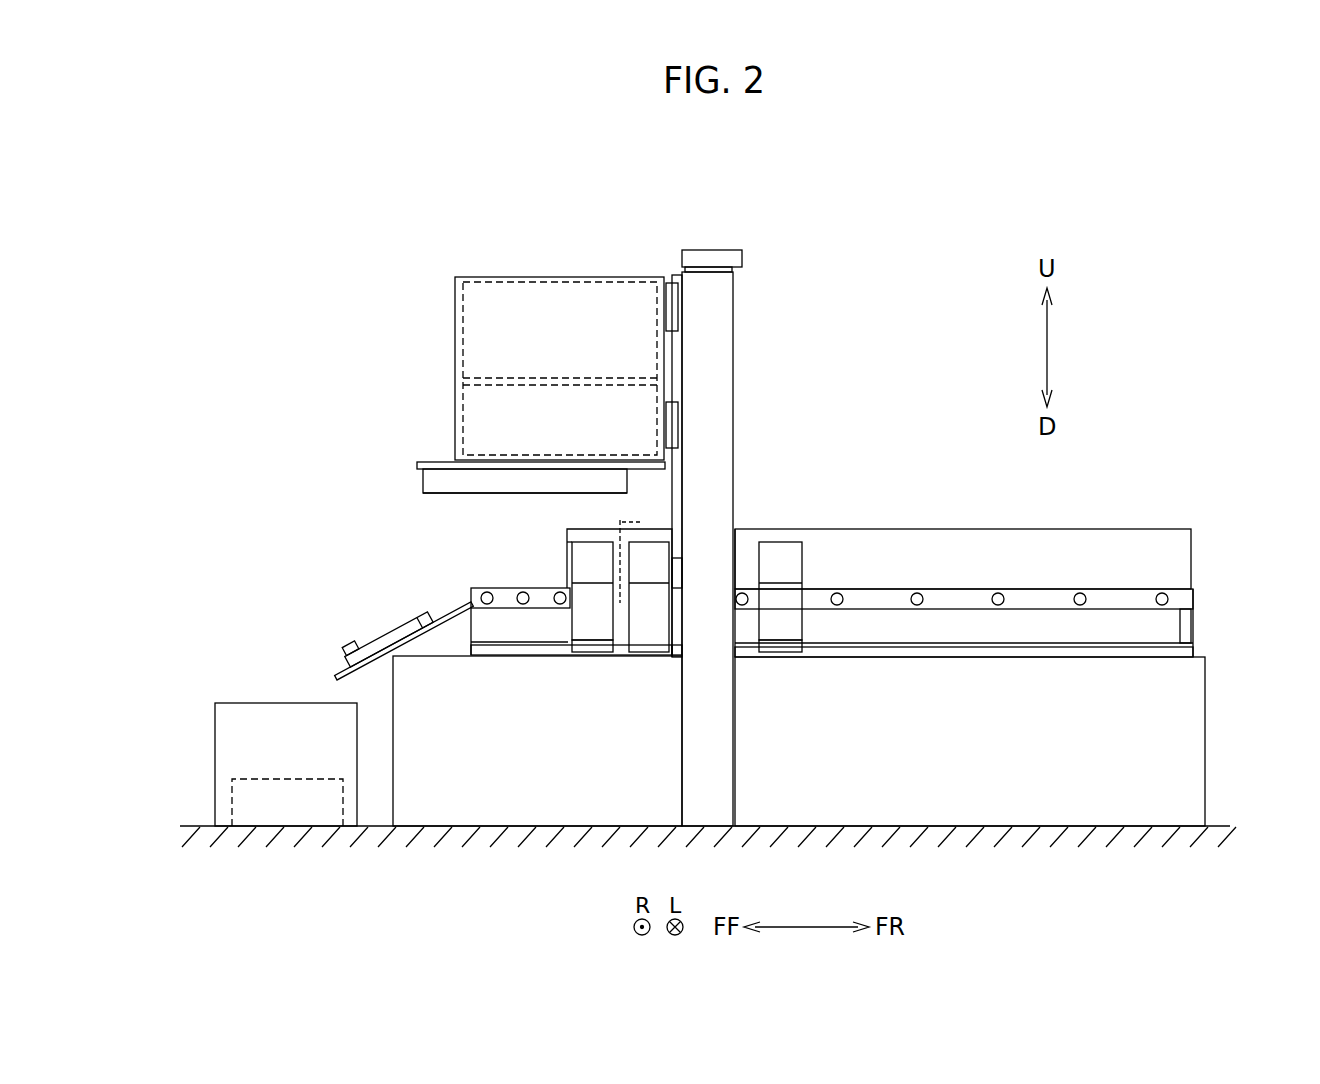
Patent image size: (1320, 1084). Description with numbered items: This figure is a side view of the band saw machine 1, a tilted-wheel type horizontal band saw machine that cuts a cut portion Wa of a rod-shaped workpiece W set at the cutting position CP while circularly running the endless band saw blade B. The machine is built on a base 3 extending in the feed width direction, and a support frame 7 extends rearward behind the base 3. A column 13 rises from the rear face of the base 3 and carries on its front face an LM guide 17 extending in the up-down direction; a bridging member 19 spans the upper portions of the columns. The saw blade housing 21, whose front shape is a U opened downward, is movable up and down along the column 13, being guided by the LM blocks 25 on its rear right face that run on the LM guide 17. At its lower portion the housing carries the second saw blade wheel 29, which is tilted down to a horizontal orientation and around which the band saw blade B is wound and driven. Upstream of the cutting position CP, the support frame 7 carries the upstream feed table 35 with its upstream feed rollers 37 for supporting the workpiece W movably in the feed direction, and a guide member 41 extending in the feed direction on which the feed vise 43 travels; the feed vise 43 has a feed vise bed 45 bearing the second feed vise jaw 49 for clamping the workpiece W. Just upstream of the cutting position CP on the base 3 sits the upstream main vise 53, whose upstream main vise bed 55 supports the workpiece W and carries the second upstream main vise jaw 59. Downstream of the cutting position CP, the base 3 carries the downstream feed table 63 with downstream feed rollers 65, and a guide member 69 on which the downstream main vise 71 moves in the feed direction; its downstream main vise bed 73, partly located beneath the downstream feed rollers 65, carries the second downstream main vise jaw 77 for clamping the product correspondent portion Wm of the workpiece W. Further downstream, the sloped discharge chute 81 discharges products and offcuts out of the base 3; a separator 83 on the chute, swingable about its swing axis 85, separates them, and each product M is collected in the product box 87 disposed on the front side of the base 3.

The band saw machine 1 is at (818, 182).
The base 3 is at (487, 828).
The support frame 7 is at (1206, 735).
The column 13 is at (733, 322).
The LM guide 17 is at (682, 373).
The bridging member 19 is at (717, 251).
The saw blade housing 21 is at (445, 318).
The LM block 25 is at (666, 307).
The second saw blade wheel 29 is at (417, 484).
The upstream feed table 35 is at (980, 578).
The upstream feed rollers 37 is at (917, 592).
The guide member 41 is at (1052, 658).
The feed vise 43 is at (770, 530).
The feed vise bed 45 is at (780, 630).
The second feed vise jaw 49 is at (797, 565).
The upstream main vise 53 is at (682, 603).
The upstream main vise bed 55 is at (652, 654).
The second upstream main vise jaw 59 is at (656, 566).
The downstream feed table 63 is at (462, 582).
The downstream feed rollers 65 is at (560, 606).
The guide member 69 is at (490, 656).
The downstream main vise 71 is at (560, 545).
The downstream main vise bed 73 is at (594, 626).
The second downstream main vise jaw 77 is at (578, 578).
The discharge chute 81 is at (452, 607).
The separator 83 is at (384, 630).
The swing axis 85 is at (343, 650).
The product box 87 is at (215, 729).
The product M is at (232, 802).
The band saw blade B is at (628, 485).
The cutting position CP is at (640, 522).
The workpiece W is at (1130, 529).
The cut portion Wa is at (620, 528).
The product correspondent portion Wm is at (562, 538).